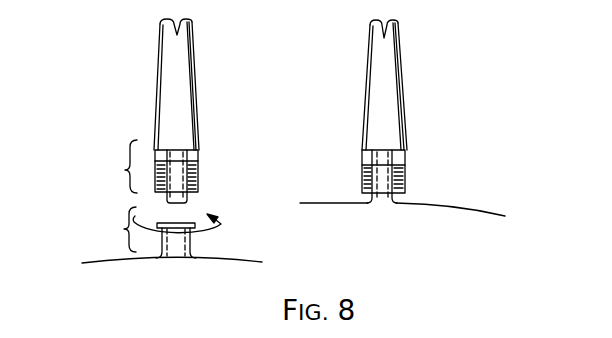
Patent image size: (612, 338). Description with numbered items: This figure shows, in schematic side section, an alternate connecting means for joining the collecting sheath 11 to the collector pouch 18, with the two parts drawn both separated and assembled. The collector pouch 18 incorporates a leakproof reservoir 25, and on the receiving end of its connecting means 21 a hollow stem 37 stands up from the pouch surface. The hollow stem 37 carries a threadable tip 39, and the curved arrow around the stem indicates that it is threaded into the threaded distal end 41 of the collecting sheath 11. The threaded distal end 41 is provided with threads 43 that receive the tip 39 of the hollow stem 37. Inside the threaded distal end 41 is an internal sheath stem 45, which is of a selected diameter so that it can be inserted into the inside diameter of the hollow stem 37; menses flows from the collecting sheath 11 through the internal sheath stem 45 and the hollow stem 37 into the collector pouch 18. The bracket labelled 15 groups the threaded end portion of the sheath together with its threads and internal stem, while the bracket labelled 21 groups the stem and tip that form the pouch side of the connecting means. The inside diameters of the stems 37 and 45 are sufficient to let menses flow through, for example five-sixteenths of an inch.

The collecting sheath 11 is at (193, 58).
The coupling assembly 15 is at (124, 170).
The collector pouch 18 is at (88, 253).
The connecting means 21 is at (123, 229).
The reservoir 25 is at (132, 261).
The hollow stem 37 is at (193, 247).
The threadable tip 39 is at (178, 221).
The threaded distal end 41 is at (203, 170).
The threads 43 is at (157, 173).
The internal sheath stem 45 is at (188, 200).